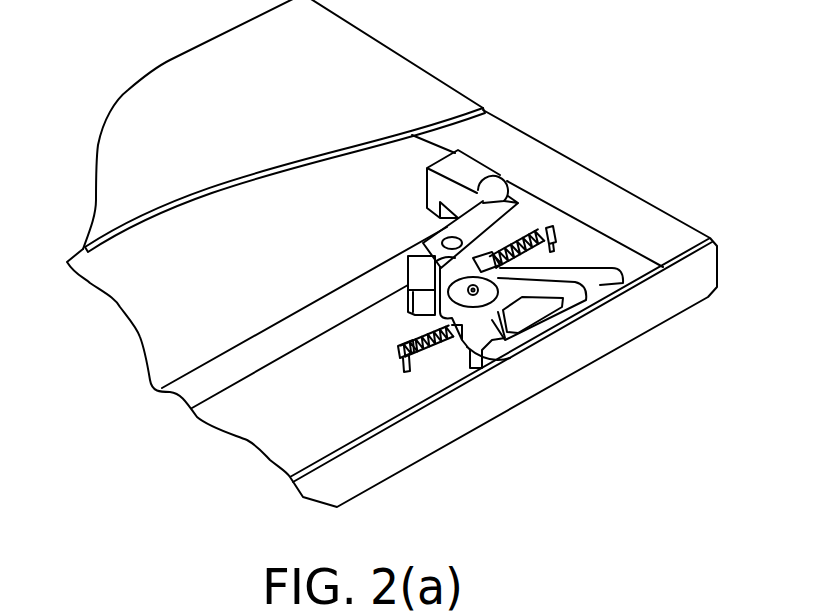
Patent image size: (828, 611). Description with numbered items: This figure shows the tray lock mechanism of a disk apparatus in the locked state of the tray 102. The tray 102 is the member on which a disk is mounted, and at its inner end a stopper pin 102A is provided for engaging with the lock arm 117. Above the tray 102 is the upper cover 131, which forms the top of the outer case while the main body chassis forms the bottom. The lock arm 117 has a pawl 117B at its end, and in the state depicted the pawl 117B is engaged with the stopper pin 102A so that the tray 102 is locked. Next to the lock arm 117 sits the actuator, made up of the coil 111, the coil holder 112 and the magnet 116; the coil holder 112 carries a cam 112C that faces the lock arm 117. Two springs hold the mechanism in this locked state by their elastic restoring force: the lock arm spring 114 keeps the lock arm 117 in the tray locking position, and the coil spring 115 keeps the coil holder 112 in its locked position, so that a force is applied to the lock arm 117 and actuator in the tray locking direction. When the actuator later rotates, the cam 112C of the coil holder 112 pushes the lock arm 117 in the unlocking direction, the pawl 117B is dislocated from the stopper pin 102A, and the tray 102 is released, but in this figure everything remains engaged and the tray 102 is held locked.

The upper cover 131 is at (402, 80).
The tray 102 is at (160, 348).
The stopper pin 102A is at (480, 173).
The pawl 117B is at (497, 178).
The lock arm 117 is at (500, 225).
The lock arm spring 114 is at (556, 250).
The coil spring 115 is at (422, 356).
The cam 112C is at (435, 263).
The coil holder 112 is at (482, 353).
The coil 111 is at (570, 300).
The magnet 116 is at (612, 282).